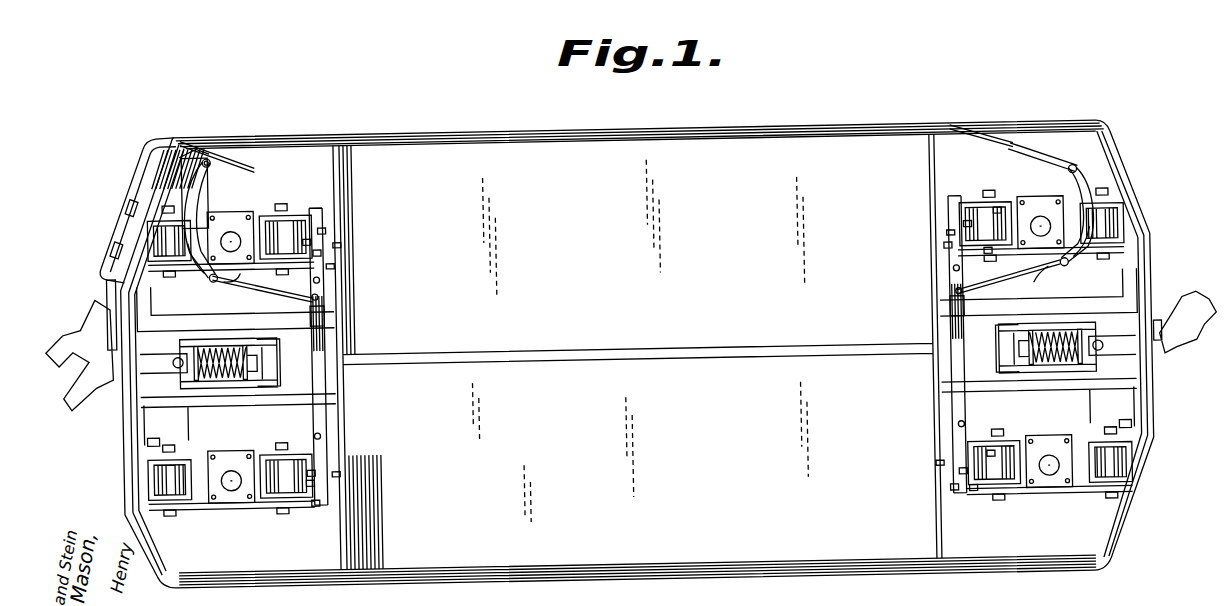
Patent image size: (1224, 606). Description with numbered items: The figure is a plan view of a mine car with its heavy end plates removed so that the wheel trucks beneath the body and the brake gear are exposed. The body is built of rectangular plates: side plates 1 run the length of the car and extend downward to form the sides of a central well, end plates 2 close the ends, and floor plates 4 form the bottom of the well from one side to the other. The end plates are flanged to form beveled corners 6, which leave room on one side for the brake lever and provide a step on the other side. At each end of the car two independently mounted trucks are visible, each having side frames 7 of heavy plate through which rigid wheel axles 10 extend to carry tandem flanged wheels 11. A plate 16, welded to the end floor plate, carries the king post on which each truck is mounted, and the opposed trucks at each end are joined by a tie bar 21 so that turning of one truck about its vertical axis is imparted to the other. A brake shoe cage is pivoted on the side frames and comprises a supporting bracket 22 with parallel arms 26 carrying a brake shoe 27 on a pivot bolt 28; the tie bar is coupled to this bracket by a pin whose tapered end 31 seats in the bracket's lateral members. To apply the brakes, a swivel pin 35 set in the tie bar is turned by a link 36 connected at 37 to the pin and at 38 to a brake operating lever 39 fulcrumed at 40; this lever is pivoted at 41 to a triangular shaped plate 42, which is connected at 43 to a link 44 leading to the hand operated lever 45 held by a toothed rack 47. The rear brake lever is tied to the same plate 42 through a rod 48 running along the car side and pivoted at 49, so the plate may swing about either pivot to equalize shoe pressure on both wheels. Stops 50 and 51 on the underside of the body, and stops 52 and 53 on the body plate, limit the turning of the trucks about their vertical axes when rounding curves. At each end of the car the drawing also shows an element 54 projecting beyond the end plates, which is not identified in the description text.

The side plate 1 is at (541, 578).
The end plate 2 is at (126, 413).
The floor plate 4 is at (637, 351).
The beveled corner 6 is at (152, 261).
The side frame 7 is at (300, 219).
The wheel axle 10 is at (160, 205).
The flanged wheel 11 is at (293, 230).
The plate 16 is at (246, 212).
The tie bar 21 is at (326, 336).
The supporting bracket 22 is at (355, 244).
The arm 26 is at (323, 247).
The brake shoe 27 is at (328, 225).
The pivot bolt 28 is at (313, 236).
The tapered end 31 is at (321, 275).
The swivel pin 35 is at (318, 293).
The link 36 is at (288, 293).
The connection 37 is at (325, 311).
The connection 38 is at (242, 270).
The brake operating lever 39 is at (202, 249).
The fulcrum 40 is at (211, 209).
The pivot 41 is at (203, 180).
The triangular shaped plate 42 is at (186, 172).
The connection 43 is at (192, 150).
The link 44 is at (130, 152).
The hand operated lever 45 is at (132, 192).
The toothed rack 47 is at (115, 241).
The rod 48 is at (251, 156).
The pivot 49 is at (212, 152).
The stop 50 is at (154, 283).
The stop 51 is at (158, 431).
The stop 52 is at (343, 240).
The stop 53 is at (336, 261).
The coupler 54 is at (74, 380).